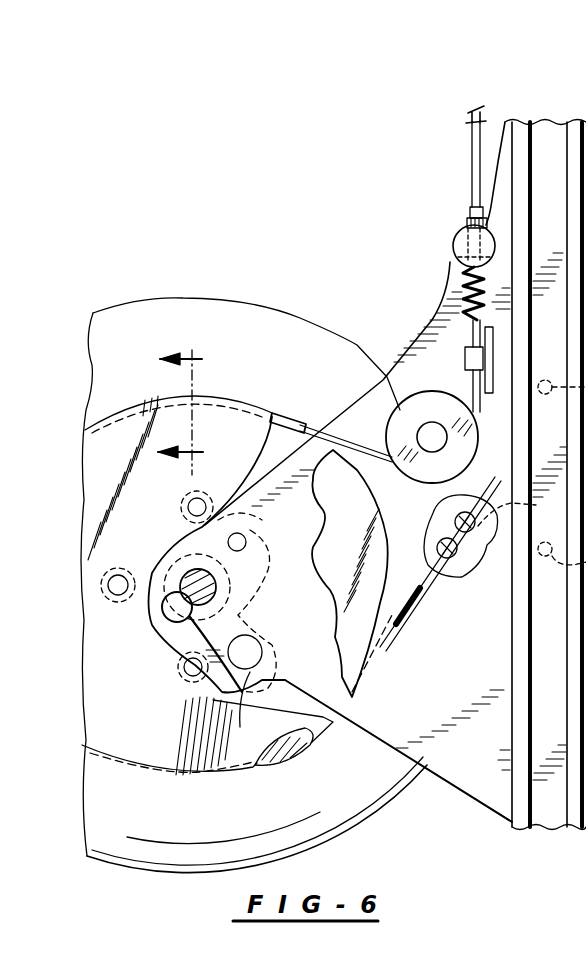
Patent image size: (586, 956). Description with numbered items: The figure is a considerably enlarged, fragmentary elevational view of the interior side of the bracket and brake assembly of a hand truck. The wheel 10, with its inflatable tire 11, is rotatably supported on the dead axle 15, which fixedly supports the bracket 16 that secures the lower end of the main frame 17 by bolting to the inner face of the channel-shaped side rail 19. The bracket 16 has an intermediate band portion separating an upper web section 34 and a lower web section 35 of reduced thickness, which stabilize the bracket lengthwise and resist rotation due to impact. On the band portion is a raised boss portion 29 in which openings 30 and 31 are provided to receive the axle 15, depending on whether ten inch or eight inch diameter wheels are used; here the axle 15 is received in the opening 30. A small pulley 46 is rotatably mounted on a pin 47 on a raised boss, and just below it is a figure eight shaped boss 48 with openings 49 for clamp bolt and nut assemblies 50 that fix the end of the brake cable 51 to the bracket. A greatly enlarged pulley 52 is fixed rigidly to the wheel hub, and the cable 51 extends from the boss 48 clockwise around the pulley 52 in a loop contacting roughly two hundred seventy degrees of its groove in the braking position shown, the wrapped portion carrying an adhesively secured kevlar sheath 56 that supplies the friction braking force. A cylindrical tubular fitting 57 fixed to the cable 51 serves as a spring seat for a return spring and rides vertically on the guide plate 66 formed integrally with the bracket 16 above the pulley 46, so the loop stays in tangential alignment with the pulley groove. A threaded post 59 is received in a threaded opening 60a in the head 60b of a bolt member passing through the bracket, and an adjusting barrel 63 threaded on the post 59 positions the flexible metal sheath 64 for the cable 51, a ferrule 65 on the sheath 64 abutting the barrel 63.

The wheels 10 is at (362, 830).
The inflatable tires 11 is at (207, 307).
The dead axle 15 is at (153, 622).
The bracket 16 is at (420, 337).
The main frame 17 is at (178, 402).
The side rail 19 is at (509, 773).
The raised boss portion 29 is at (278, 573).
The axle opening 30 is at (170, 620).
The axle opening 31 is at (210, 736).
The upper web section 34 is at (466, 224).
The lower web section 35 is at (440, 768).
The pulley 46 is at (400, 413).
The pin 47 is at (418, 440).
The figure eight shaped boss 48 is at (440, 565).
The openings 49 is at (532, 472).
The clamp bolt and nut assembly 50 is at (463, 570).
The brake cable 51 is at (472, 118).
The pulley 52 is at (180, 778).
The kevlar sheath 56 is at (280, 747).
The fitting 57 is at (465, 357).
The threaded post 59 is at (495, 236).
The threaded opening 60a is at (450, 255).
The bolt head 60b is at (458, 252).
The adjusting barrel 63 is at (490, 222).
The sheath 64 is at (472, 152).
The ferrule 65 is at (470, 210).
The guide plate 66 is at (493, 352).